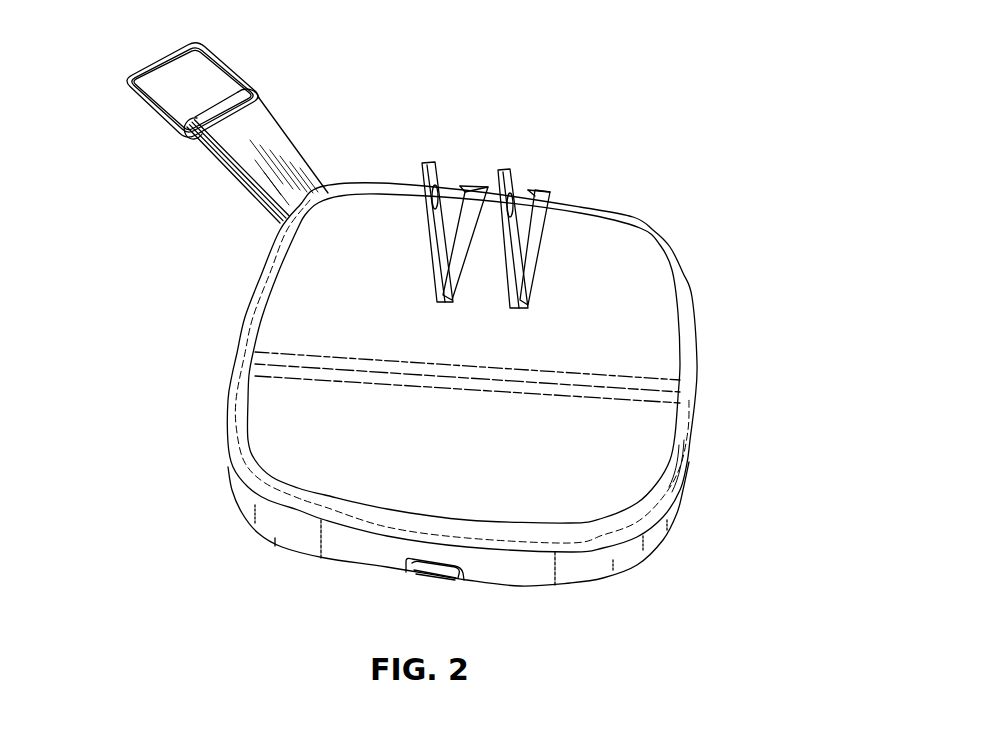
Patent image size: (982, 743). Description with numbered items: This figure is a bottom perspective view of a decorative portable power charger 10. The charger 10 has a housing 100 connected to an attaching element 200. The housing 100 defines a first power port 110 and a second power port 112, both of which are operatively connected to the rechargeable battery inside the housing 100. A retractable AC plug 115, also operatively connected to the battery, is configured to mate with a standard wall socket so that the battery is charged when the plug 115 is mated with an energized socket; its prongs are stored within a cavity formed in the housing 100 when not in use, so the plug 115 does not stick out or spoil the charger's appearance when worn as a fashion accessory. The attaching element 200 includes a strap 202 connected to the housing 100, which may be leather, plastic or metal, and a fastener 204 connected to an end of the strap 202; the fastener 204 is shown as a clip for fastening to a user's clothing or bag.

The decorative portable power charger 10 is at (136, 32).
The housing 100 is at (699, 368).
The first power port 110 is at (426, 582).
The second power port 112 is at (686, 458).
The retractable AC plug 115 is at (511, 208).
The attaching element 200 is at (284, 122).
The strap 202 is at (264, 198).
The fastener 204 is at (228, 64).